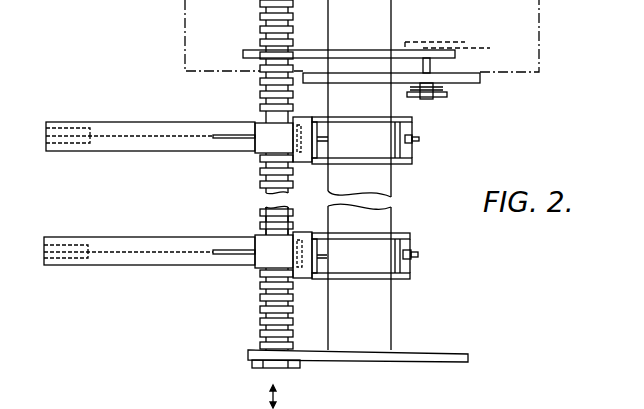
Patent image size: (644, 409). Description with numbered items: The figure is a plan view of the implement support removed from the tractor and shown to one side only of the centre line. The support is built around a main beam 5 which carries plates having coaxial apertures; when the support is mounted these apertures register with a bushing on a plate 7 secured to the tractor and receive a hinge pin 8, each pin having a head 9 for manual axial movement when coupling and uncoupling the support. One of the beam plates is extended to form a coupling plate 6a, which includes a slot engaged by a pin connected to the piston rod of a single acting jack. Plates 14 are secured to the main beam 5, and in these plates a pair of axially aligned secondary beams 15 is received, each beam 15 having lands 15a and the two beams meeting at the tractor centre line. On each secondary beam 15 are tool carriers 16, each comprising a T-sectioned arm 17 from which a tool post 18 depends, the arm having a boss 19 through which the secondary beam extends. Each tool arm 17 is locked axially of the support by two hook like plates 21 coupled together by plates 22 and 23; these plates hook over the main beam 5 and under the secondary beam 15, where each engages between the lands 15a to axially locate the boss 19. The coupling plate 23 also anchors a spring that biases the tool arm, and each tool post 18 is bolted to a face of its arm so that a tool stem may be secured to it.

The main beam 5 is at (387, 207).
The coupling plate 6a is at (480, 78).
The plate 7 is at (465, 42).
The hinge pin 8 is at (425, 52).
The head 9 is at (437, 97).
The plates 14 is at (457, 353).
The secondary beams 15 is at (259, 297).
The lands 15a is at (257, 214).
The tool carriers 16 is at (137, 121).
The arm 17 is at (167, 236).
The tool post 18 is at (65, 245).
The boss 19 is at (264, 131).
The hook like plates 21 is at (403, 234).
The plate 22 is at (303, 275).
The coupling plate 23 is at (405, 267).